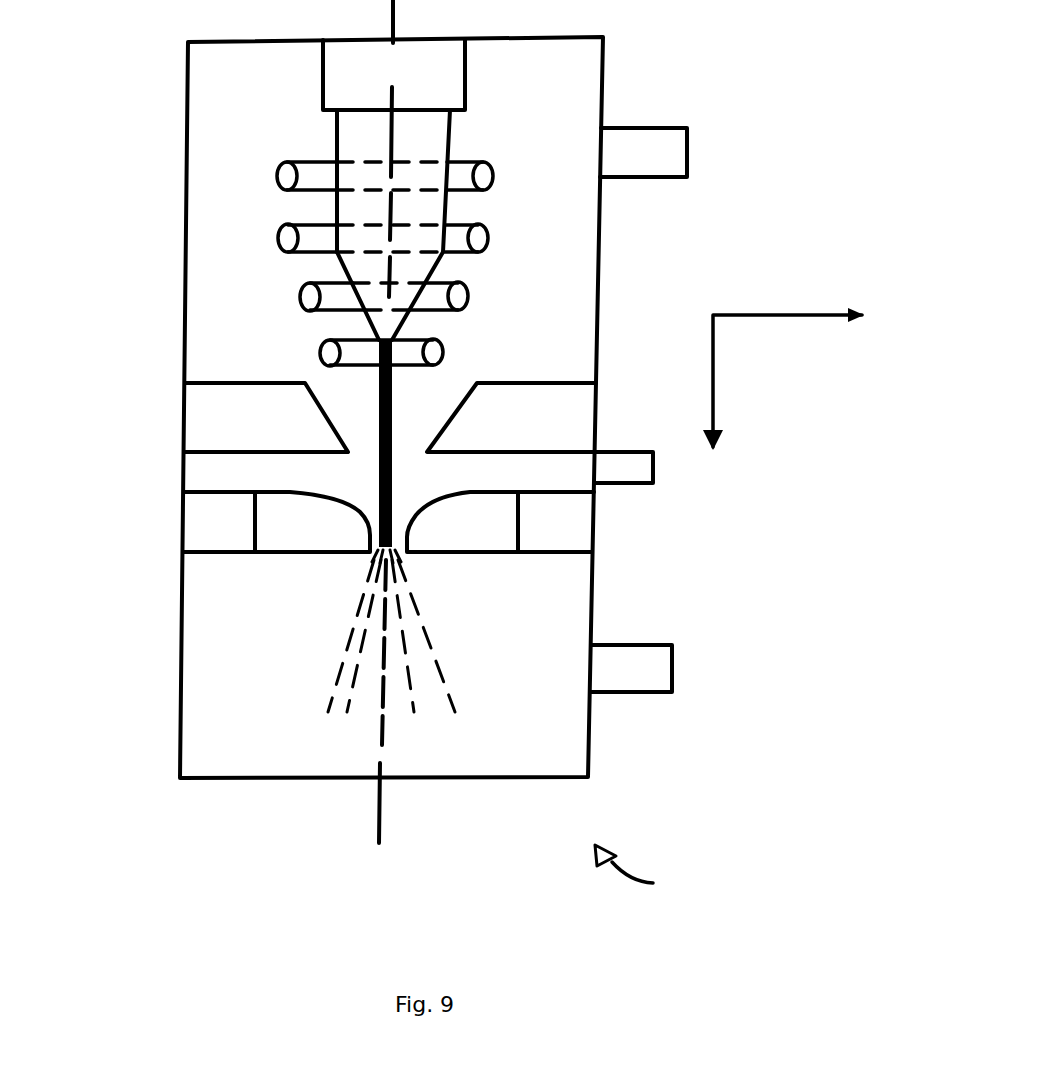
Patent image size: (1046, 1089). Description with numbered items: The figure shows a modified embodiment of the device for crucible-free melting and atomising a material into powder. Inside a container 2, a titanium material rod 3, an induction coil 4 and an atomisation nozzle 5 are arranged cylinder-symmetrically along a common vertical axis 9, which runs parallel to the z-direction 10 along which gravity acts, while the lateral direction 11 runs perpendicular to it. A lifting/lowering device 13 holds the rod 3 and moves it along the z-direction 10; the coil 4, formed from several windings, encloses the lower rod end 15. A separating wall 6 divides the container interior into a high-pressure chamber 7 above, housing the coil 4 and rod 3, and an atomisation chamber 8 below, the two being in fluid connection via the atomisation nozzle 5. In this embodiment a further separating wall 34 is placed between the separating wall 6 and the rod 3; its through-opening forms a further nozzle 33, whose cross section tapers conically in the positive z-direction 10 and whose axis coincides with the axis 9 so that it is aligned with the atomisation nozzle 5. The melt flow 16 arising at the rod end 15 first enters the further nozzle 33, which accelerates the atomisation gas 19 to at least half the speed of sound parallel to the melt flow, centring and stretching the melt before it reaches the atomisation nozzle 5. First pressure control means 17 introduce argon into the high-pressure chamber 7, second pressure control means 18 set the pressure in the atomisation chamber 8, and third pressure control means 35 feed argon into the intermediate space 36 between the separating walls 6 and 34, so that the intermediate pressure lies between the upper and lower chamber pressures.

The container 2 is at (278, 782).
The material rod 3 is at (452, 138).
The induction coil 4 is at (257, 250).
The atomisation nozzle 5 is at (367, 558).
The separating wall 6 is at (236, 553).
The high-pressure chamber 7 is at (228, 102).
The atomisation chamber 8 is at (219, 757).
The vertical axis 9 is at (381, 822).
The z-direction 10 is at (707, 388).
The lateral direction 11 is at (758, 315).
The lifting/lowering device 13 is at (467, 73).
The rod end 15 is at (313, 336).
The melt flow 16 is at (393, 470).
The first pressure control means 17 is at (655, 128).
The second pressure control means 18 is at (625, 693).
The atomisation gas 19 is at (350, 380).
The further nozzle 33 is at (390, 417).
The further separating wall 34 is at (242, 456).
The third pressure control means 35 is at (628, 484).
The intermediate space 36 is at (193, 465).